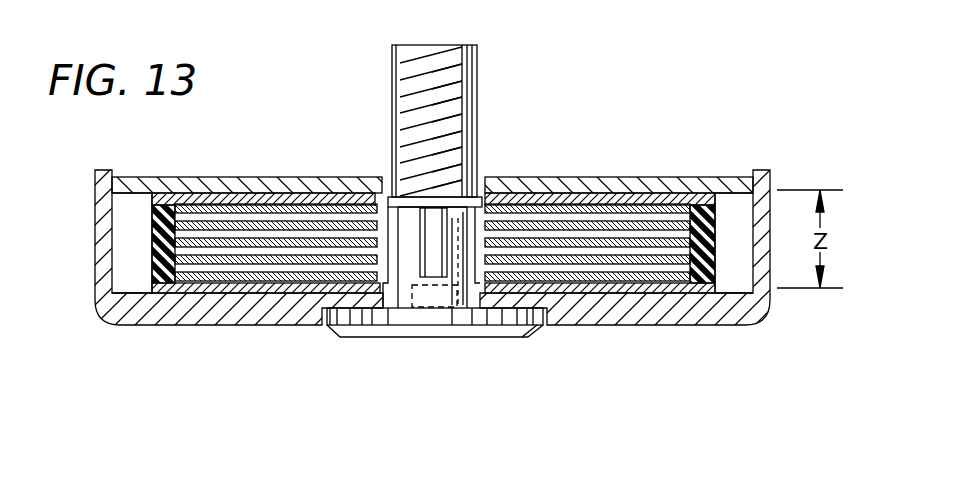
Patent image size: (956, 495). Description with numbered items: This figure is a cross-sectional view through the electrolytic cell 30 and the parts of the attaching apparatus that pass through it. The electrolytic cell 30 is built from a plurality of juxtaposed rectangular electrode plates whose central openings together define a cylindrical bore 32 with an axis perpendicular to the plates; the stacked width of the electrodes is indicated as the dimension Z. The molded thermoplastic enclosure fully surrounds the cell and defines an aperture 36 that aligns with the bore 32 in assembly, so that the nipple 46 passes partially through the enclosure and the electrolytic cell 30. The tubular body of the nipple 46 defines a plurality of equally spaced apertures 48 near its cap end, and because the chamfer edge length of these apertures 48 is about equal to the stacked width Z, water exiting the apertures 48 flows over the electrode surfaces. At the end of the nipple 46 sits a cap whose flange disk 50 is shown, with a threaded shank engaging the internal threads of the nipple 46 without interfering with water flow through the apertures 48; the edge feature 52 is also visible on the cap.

The electrolytic cell 30 is at (580, 223).
The cylindrical bore 32 is at (378, 215).
The aperture 36 is at (387, 302).
The nipple 46 is at (397, 57).
The apertures 48 is at (437, 270).
The flange disk 50 is at (490, 338).
The chamfered edge 52 is at (528, 332).